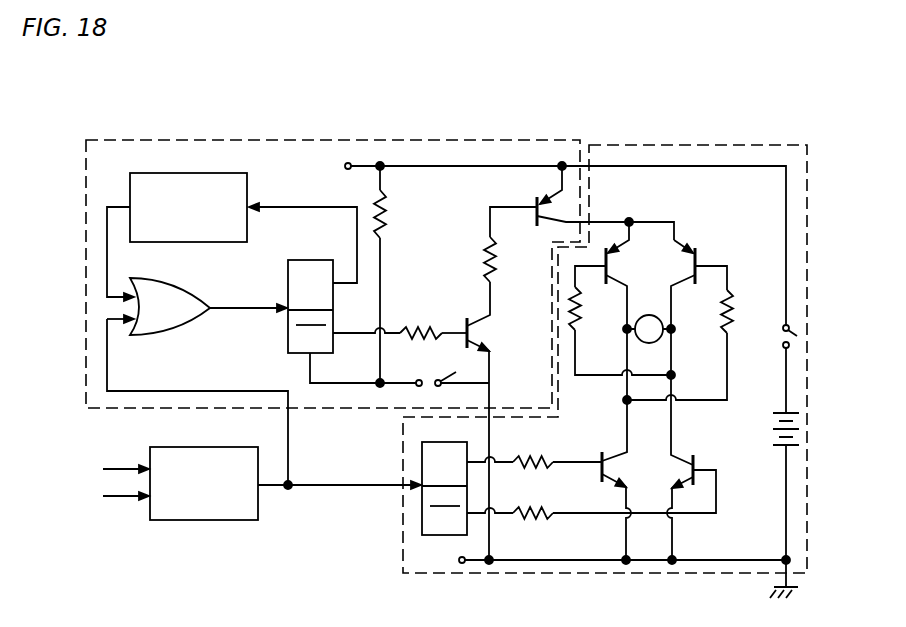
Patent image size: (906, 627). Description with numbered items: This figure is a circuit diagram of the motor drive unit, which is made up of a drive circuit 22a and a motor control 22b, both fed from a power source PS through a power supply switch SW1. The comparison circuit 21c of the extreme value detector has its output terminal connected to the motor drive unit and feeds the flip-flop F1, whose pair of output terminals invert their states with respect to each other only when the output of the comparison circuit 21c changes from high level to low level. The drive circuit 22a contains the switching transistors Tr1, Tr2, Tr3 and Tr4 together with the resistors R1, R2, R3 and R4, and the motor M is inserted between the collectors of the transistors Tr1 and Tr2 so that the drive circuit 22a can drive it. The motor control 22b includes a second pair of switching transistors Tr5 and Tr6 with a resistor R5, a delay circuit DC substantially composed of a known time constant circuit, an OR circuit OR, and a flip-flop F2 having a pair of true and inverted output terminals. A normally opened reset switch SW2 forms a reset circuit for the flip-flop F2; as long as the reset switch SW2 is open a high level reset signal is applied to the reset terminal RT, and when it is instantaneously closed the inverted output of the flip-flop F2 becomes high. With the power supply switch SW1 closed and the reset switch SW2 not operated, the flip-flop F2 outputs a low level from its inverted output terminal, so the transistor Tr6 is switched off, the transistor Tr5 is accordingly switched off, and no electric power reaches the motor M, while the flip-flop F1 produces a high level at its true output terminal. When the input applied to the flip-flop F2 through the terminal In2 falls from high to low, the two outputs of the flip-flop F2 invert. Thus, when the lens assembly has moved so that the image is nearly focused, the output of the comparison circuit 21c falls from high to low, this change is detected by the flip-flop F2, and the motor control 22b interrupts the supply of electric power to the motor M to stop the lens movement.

The motor control 22b is at (410, 140).
The drive circuit 22a is at (674, 145).
The delay circuit DC is at (247, 190).
The OR circuit OR is at (187, 290).
The input terminal In2 is at (287, 314).
The flip-flop F2 is at (328, 260).
The reset terminal RT is at (309, 358).
The resistor R5 is at (386, 216).
The switching transistor Tr6 is at (480, 338).
The reset switch SW2 is at (456, 366).
The switching transistor Tr5 is at (540, 196).
The switching transistor Tr1 is at (618, 258).
The switching transistor Tr2 is at (703, 252).
The resistor R1 is at (582, 306).
The resistor R2 is at (733, 306).
The motor M is at (649, 329).
The switching transistor Tr3 is at (604, 452).
The switching transistor Tr4 is at (714, 446).
The resistor R3 is at (528, 456).
The resistor R4 is at (538, 508).
The flip-flop F1 is at (422, 530).
The comparison circuit 21c is at (228, 520).
The power supply switch SW1 is at (797, 336).
The power source PS is at (797, 431).